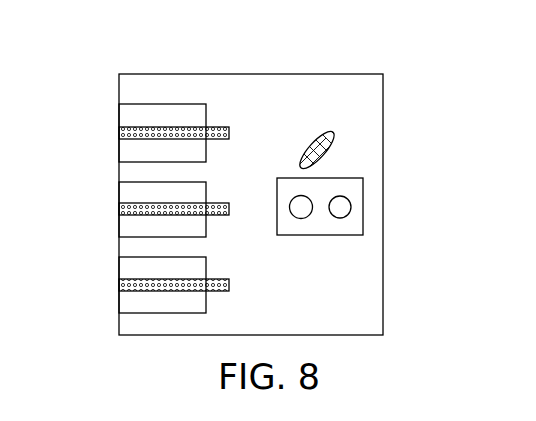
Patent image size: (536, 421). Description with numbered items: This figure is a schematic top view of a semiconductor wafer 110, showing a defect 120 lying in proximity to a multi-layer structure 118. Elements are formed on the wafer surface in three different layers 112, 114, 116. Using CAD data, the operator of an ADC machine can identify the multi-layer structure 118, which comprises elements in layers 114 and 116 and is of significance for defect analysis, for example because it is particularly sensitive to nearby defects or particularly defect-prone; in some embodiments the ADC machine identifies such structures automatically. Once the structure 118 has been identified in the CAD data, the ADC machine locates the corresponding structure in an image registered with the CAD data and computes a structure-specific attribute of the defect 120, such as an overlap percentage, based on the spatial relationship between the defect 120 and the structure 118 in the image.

The semiconductor wafer 110 is at (285, 74).
The layer 112 is at (119, 135).
The layer 114 is at (119, 108).
The layer 116 is at (337, 218).
The multi-layer structure 118 is at (391, 178).
The defect 120 is at (306, 146).